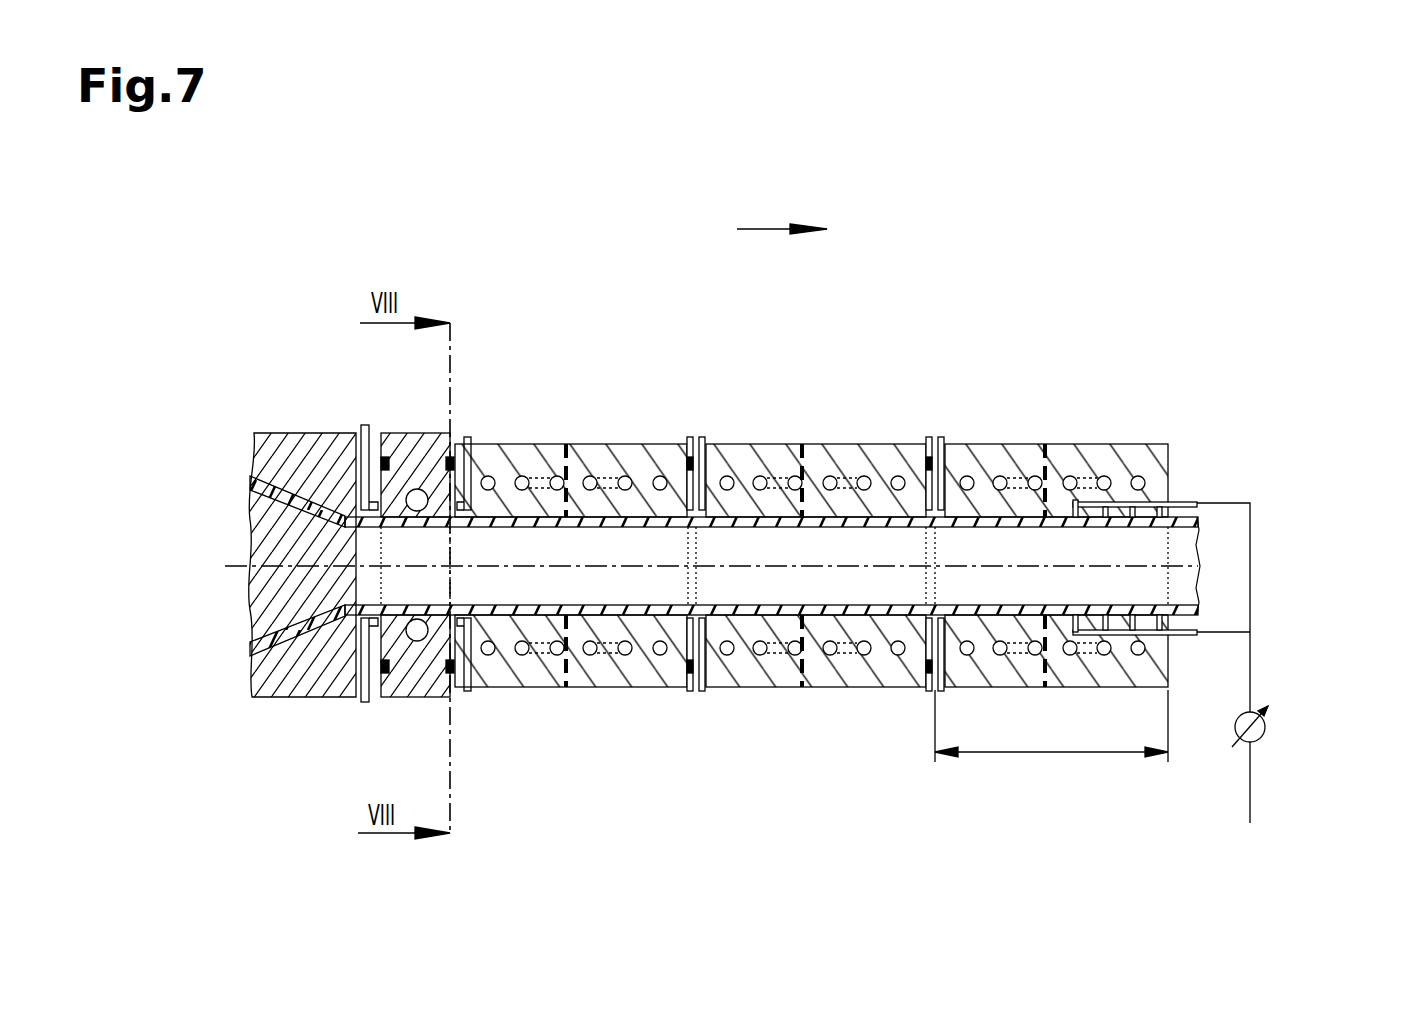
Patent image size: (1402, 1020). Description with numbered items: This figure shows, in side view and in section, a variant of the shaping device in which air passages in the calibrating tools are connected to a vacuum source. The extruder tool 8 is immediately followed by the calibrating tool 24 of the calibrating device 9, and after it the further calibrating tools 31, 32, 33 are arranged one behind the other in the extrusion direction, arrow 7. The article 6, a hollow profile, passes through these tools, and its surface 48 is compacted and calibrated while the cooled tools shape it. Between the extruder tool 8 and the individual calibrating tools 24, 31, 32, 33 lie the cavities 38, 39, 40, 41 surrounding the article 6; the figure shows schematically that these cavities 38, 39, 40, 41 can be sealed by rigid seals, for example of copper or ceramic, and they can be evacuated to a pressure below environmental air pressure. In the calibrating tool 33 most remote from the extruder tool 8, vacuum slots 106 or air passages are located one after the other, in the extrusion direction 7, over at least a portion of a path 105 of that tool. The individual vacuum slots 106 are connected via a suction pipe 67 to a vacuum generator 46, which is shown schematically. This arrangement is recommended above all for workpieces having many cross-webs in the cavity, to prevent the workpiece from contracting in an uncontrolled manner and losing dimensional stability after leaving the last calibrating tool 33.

The article 6 is at (1180, 585).
The extrusion direction 7 is at (765, 228).
The extruder tool 8 is at (292, 545).
The calibrating device 9 is at (900, 258).
The calibrating tool 24 is at (400, 690).
The calibrating tool 31 is at (583, 685).
The calibrating tool 32 is at (830, 685).
The calibrating tool 33 is at (1115, 670).
The cavity 38 is at (340, 437).
The cavity 39 is at (470, 445).
The cavity 40 is at (690, 478).
The cavity 41 is at (930, 488).
The vacuum generator 46 is at (1275, 745).
The surface 48 is at (1197, 505).
The suction pipe 67 is at (1240, 503).
The path 105 is at (1108, 752).
The vacuum slots 106 is at (1073, 500).